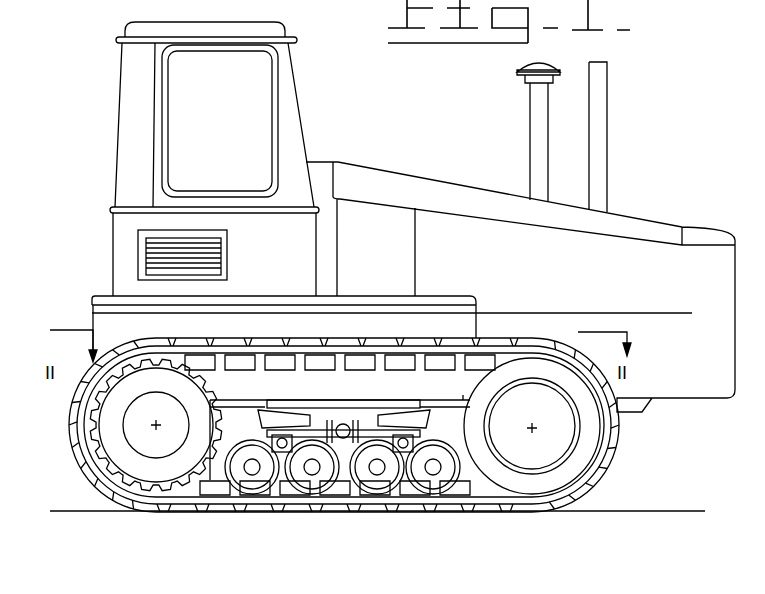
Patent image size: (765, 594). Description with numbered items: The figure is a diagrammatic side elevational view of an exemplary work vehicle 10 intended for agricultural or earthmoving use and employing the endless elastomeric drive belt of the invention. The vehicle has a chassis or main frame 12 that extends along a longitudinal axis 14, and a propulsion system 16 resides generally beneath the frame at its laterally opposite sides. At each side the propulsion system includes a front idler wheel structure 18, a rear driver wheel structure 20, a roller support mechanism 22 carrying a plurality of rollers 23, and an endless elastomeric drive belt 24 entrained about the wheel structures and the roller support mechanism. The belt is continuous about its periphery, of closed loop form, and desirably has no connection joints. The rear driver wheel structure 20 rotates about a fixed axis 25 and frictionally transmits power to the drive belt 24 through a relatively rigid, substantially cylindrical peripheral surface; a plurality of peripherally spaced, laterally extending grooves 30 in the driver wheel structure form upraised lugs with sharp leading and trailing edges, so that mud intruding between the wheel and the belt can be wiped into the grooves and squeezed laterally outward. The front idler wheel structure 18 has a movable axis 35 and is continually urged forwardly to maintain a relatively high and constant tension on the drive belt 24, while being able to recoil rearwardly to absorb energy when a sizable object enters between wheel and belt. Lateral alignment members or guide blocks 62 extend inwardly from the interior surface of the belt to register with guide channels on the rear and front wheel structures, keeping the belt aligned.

The work vehicle 10 is at (418, 146).
The main frame 12 is at (283, 270).
The longitudinal axis 14 is at (573, 310).
The propulsion system 16 is at (600, 483).
The front idler wheel structure 18 is at (588, 440).
The rear driver wheel structure 20 is at (118, 468).
The roller support mechanism 22 is at (340, 408).
The rollers 23 is at (311, 484).
The endless elastomeric drive belt 24 is at (490, 333).
The fixed axis 25 is at (153, 425).
The grooves 30 is at (216, 403).
The movable axis 35 is at (538, 405).
The guide blocks 62 is at (378, 375).